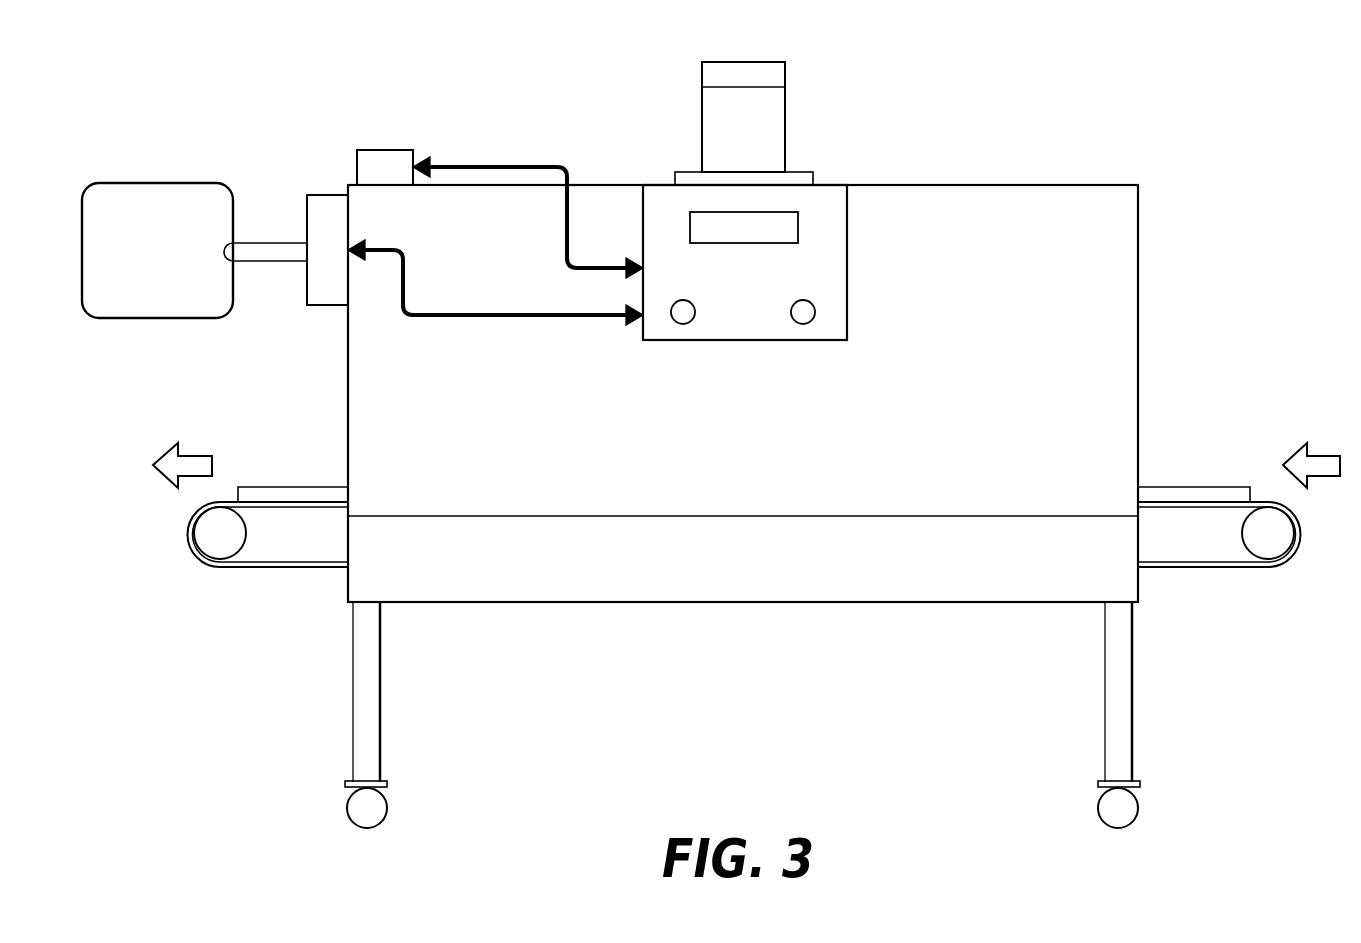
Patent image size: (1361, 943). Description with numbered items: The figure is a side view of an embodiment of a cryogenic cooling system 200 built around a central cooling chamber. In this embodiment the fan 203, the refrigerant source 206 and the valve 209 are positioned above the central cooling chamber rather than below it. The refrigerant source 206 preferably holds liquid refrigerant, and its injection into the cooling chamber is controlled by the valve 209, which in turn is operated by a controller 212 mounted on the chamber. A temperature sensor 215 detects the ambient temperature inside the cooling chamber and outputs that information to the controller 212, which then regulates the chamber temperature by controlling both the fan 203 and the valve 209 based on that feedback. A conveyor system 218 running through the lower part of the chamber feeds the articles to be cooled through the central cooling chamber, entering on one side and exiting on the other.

The cooling system 200 is at (1103, 133).
The fan 203 is at (786, 133).
The refrigerant source 206 is at (183, 318).
The valve 209 is at (323, 195).
The controller 212 is at (847, 293).
The temperature sensor 215 is at (385, 150).
The conveyor system 218 is at (247, 567).